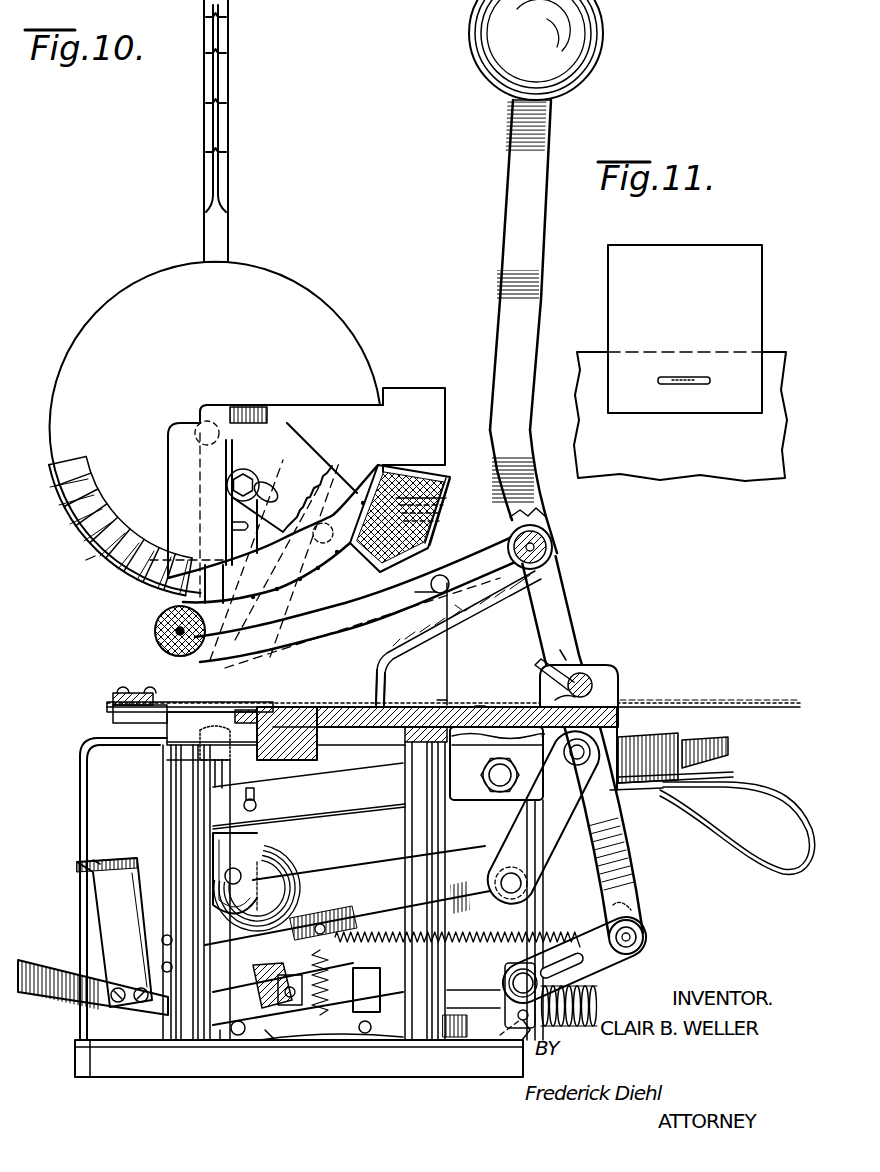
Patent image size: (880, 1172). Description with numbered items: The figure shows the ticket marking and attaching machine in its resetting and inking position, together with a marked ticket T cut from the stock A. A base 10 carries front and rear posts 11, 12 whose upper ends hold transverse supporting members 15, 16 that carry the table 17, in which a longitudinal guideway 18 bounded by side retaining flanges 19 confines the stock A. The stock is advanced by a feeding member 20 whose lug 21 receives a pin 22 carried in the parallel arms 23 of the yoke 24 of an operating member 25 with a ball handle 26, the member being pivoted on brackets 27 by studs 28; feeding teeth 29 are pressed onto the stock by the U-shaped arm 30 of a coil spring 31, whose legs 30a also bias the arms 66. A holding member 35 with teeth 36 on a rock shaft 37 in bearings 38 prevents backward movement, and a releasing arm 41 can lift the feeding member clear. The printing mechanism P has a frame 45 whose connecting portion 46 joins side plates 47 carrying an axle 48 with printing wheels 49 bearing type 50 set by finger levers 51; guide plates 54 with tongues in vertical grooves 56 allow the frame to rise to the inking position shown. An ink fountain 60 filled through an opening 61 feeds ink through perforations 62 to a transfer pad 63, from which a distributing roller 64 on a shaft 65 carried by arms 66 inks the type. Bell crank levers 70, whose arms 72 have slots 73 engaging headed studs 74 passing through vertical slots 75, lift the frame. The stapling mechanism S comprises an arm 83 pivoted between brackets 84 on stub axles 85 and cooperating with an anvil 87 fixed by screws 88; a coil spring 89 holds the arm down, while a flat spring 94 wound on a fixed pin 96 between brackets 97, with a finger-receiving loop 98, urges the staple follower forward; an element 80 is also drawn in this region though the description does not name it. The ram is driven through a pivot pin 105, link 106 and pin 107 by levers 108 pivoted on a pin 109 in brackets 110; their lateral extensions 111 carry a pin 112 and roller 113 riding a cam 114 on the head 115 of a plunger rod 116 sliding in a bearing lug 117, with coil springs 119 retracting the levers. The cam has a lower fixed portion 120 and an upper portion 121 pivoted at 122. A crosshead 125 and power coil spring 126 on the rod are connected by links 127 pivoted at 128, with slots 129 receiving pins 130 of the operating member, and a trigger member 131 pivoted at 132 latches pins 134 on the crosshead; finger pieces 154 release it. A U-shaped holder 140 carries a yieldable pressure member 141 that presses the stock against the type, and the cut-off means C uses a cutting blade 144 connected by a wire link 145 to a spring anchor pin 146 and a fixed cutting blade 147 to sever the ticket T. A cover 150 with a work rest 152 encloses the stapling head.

In FIG. 10, the base 10 is at (88, 1060).
In FIG. 10, the front posts 11 is at (185, 1035).
In FIG. 10, the rear posts 12 is at (430, 1045).
In FIG. 10, the transverse supporting member 15 is at (165, 728).
In FIG. 10, the transverse supporting member 16 is at (437, 700).
In FIG. 10, the table 17 is at (618, 722).
In FIG. 10, the longitudinal guideway 18 is at (627, 703).
In FIG. 10, the side retaining flanges 19 is at (480, 706).
In FIG. 10, the feeding member 20 is at (397, 640).
In FIG. 10, the lug 21 is at (547, 563).
In FIG. 10, the pin 22 is at (550, 540).
In FIG. 10, the parallel arms 23 is at (560, 600).
In FIG. 10, the yoke 24 is at (530, 461).
In FIG. 10, the operating member 25 is at (515, 155).
In FIG. 10, the ball handle 26 is at (603, 44).
In FIG. 10, the brackets 27 is at (620, 796).
In FIG. 10, the studs 28 is at (572, 766).
In FIG. 10, the feeding teeth 29 is at (373, 703).
In FIG. 10, the U-shaped arm 30 is at (470, 600).
In FIG. 10, the legs 30a is at (490, 568).
In FIG. 10, the coil spring 31 is at (547, 523).
In FIG. 10, the holding member 35 is at (543, 683).
In FIG. 10, the teeth 36 is at (556, 697).
In FIG. 10, the rock shaft 37 is at (590, 663).
In FIG. 10, the bearings 38 is at (613, 667).
In FIG. 10, the releasing arm 41 is at (547, 663).
In FIG. 10, the frame 45 is at (275, 391).
In FIG. 10, the connecting portion 46 is at (426, 388).
In FIG. 10, the side plates 47 is at (340, 398).
In FIG. 10, the axle 48 is at (195, 433).
In FIG. 10, the printing wheels 49 is at (98, 305).
In FIG. 10, the type 50 is at (72, 528).
In FIG. 10, the finger lever 51 is at (206, 128).
In FIG. 10, the guide plates 54 is at (168, 472).
In FIG. 10, the vertical grooves 56 is at (205, 400).
In FIG. 10, the ink fountain 60 is at (451, 490).
In FIG. 10, the opening 61 is at (450, 476).
In FIG. 10, the perforations 62 is at (448, 514).
In FIG. 10, the transfer pad 63 is at (368, 485).
In FIG. 10, the distributing roller 64 is at (157, 620).
In FIG. 10, the shaft 65 is at (176, 632).
In FIG. 10, the arms 66 is at (443, 573).
In FIG. 10, the bell crank levers 70 is at (320, 488).
In FIG. 10, the arms 72 is at (292, 505).
In FIG. 10, the slots 73 is at (268, 482).
In FIG. 10, the headed studs 74 is at (244, 468).
In FIG. 10, the vertical slots 75 is at (232, 522).
In FIG. 10, the spring 80 is at (465, 935).
In FIG. 10, the arm 83 is at (309, 796).
In FIG. 10, the brackets 84 is at (515, 800).
In FIG. 10, the stub axles 85 is at (480, 800).
In FIG. 10, the anvil 87 is at (118, 700).
In FIG. 10, the screws 88 is at (148, 687).
In FIG. 10, the coil spring 89 is at (286, 875).
In FIG. 10, the flat spring 94 is at (295, 896).
In FIG. 10, the fixed pin 96 is at (282, 858).
In FIG. 10, the brackets 97 is at (258, 846).
In FIG. 10, the finger-receiving loop 98 is at (748, 873).
In FIG. 10, the pivot pin 105 is at (160, 937).
In FIG. 10, the link 106 is at (160, 943).
In FIG. 10, the pin 107 is at (160, 968).
In FIG. 10, the levers 108 is at (374, 903).
In FIG. 10, the pin 109 is at (522, 882).
In FIG. 10, the brackets 110 is at (512, 848).
In FIG. 10, the lateral extensions 111 is at (308, 981).
In FIG. 10, the pin 112 is at (241, 1036).
In FIG. 10, the roller 113 is at (227, 1050).
In FIG. 10, the cam 114 is at (278, 1027).
In FIG. 10, the head 115 is at (349, 968).
In FIG. 10, the plunger rod 116 is at (478, 990).
In FIG. 10, the bearing lug 117 is at (372, 1005).
In FIG. 10, the coil springs 119 is at (313, 1012).
In FIG. 10, the lower fixed portion 120 is at (285, 1010).
In FIG. 10, the upper portion 121 is at (285, 964).
In FIG. 10, the pivot 122 is at (291, 1008).
In FIG. 10, the crosshead 125 is at (600, 1003).
In FIG. 10, the power coil spring 126 is at (628, 981).
In FIG. 10, the links 127 is at (645, 938).
In FIG. 10, the pivot 128 is at (527, 972).
In FIG. 10, the slots 129 is at (619, 905).
In FIG. 10, the pins 130 is at (636, 930).
In FIG. 10, the trigger member 131 is at (45, 990).
In FIG. 10, the pivot 132 is at (365, 1034).
In FIG. 10, the pins 134 is at (500, 1035).
In FIG. 10, the U-shaped holder 140 is at (220, 788).
In FIG. 10, the yieldable pressure member 141 is at (212, 733).
In FIG. 10, the cutting blade 144 is at (262, 710).
In FIG. 10, the wire link 145 is at (280, 788).
In FIG. 10, the spring anchor pin 146 is at (258, 804).
In FIG. 10, the fixed cutting blade 147 is at (295, 703).
In FIG. 10, the cover 150 is at (78, 821).
In FIG. 10, the work rest 152 is at (115, 740).
In FIG. 10, the finger pieces 154 is at (93, 862).
In FIG. 10, the stock A is at (743, 703).
In FIG. 10, the stock cut-off means C is at (286, 746).
In FIG. 10, the marking or printing mechanism P is at (87, 563).
In FIG. 10, the stapling mechanism S is at (392, 770).
In FIG. 11, the ticket T is at (734, 262).